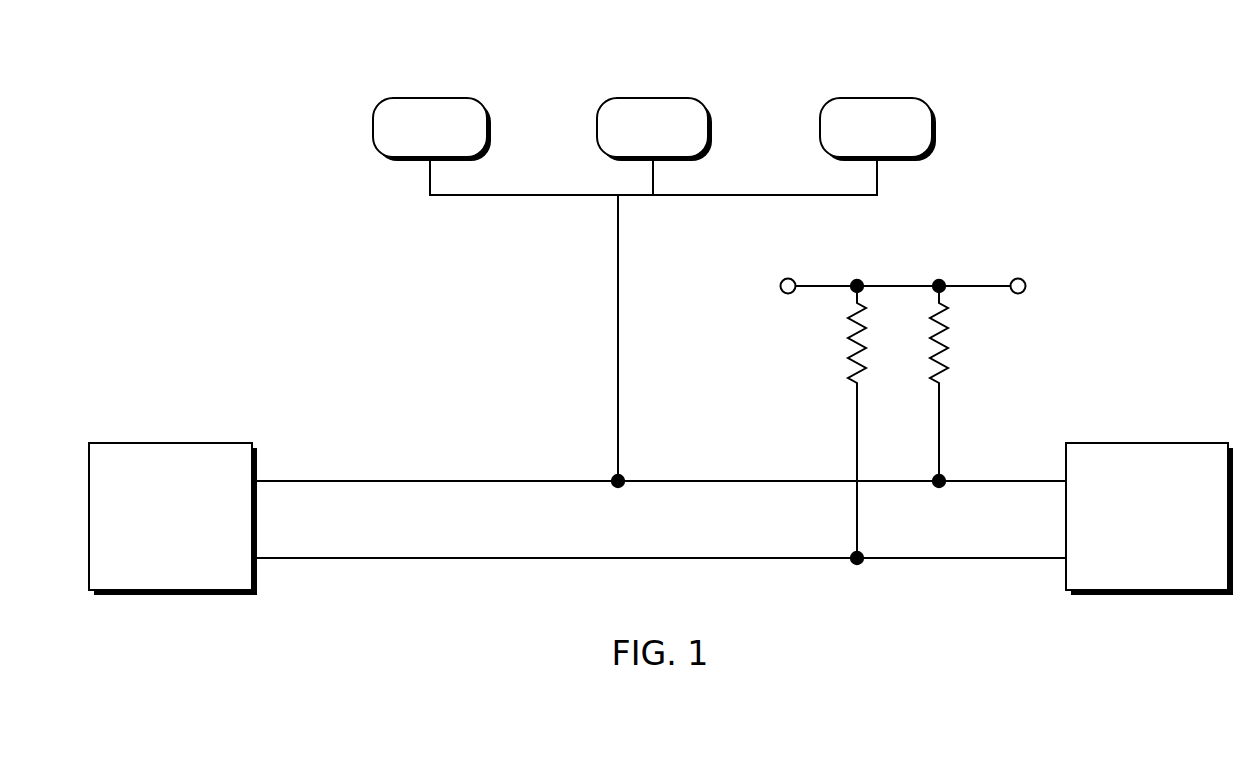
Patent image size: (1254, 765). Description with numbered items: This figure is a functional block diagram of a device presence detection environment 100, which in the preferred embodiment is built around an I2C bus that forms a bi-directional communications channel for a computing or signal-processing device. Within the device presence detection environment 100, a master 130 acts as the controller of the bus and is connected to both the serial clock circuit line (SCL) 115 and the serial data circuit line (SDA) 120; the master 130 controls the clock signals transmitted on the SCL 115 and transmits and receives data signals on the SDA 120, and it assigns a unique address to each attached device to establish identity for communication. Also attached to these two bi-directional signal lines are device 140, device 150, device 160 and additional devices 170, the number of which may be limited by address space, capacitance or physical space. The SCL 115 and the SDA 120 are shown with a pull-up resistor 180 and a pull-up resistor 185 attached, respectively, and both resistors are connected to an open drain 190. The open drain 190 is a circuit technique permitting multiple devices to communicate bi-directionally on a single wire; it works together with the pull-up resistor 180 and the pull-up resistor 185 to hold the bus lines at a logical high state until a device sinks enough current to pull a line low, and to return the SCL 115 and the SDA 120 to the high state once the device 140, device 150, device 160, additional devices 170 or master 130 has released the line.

The device presence detection environment 100 is at (1100, 77).
The serial clock circuit line (SCL) 115 is at (483, 481).
The serial data circuit line (SDA) 120 is at (517, 558).
The master 130 is at (170, 443).
The device 140 is at (430, 98).
The device 150 is at (653, 98).
The device 160 is at (877, 98).
The additional devices 170 is at (1145, 443).
The pull-up resistor 180 is at (946, 333).
The pull-up resistor 185 is at (851, 343).
The open drain 190 is at (896, 284).